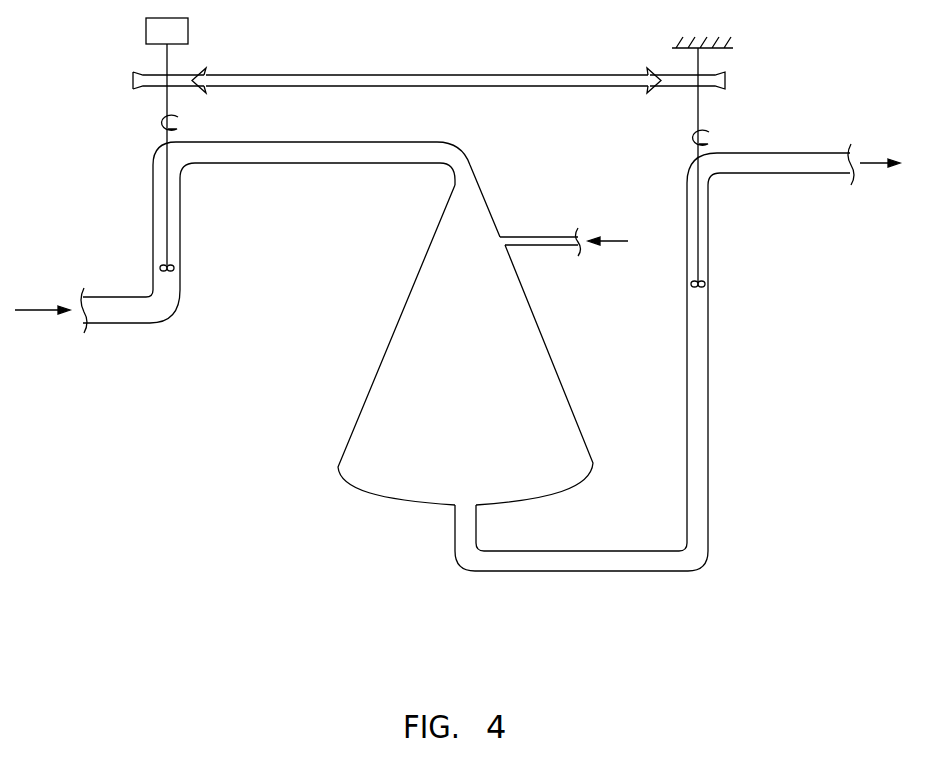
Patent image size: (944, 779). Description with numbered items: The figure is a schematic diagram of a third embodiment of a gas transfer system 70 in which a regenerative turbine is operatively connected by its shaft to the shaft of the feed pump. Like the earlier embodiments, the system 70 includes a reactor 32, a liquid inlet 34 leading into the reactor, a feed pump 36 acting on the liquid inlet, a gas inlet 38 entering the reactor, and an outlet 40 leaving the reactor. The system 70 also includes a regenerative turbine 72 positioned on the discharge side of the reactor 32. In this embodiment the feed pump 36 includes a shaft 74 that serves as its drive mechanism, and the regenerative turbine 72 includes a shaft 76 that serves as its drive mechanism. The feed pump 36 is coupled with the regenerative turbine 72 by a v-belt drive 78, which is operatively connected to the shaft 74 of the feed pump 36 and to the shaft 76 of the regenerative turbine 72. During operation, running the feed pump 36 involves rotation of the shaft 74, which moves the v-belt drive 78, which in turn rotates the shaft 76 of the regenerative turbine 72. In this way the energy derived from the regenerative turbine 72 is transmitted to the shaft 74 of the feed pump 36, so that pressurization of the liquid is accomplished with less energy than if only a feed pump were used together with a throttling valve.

The reactor 32 is at (552, 358).
The liquid inlet 34 is at (370, 142).
The feed pump 36 is at (188, 30).
The gas inlet 38 is at (537, 247).
The outlet 40 is at (572, 572).
The gas transfer system 70 is at (272, 447).
The regenerative turbine 72 is at (712, 108).
The shaft 74 is at (167, 103).
The shaft 76 is at (698, 95).
The v-belt drive 78 is at (514, 75).